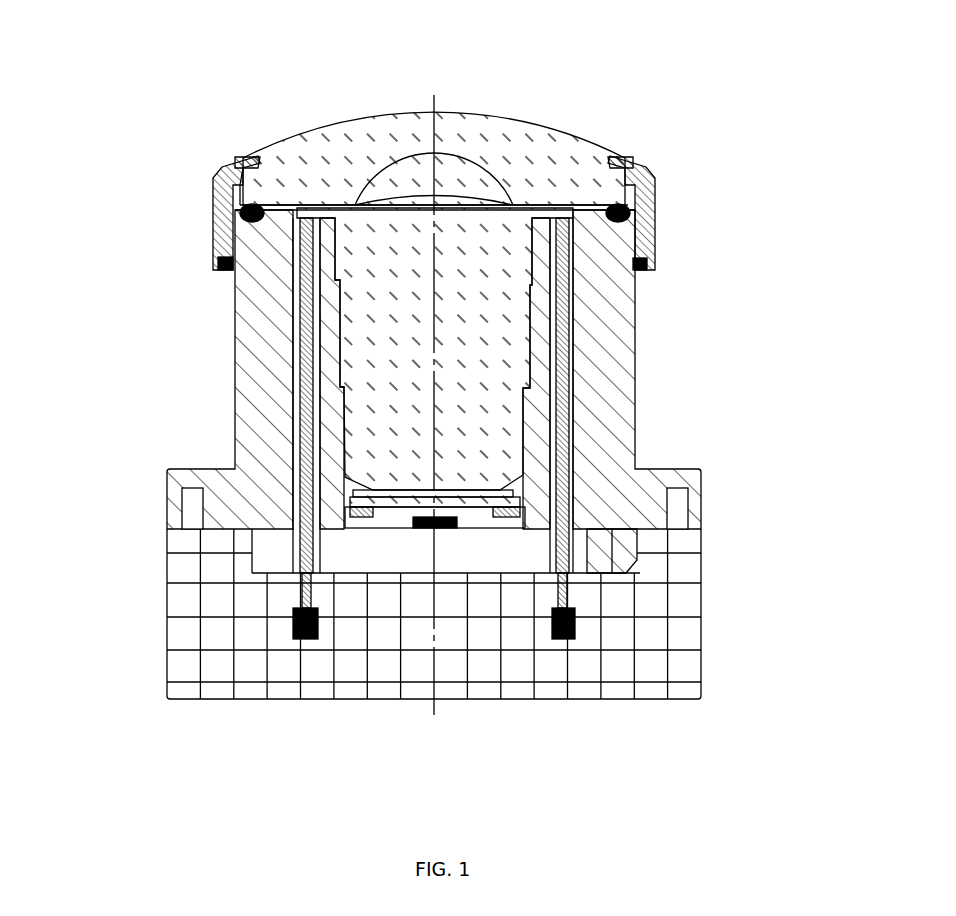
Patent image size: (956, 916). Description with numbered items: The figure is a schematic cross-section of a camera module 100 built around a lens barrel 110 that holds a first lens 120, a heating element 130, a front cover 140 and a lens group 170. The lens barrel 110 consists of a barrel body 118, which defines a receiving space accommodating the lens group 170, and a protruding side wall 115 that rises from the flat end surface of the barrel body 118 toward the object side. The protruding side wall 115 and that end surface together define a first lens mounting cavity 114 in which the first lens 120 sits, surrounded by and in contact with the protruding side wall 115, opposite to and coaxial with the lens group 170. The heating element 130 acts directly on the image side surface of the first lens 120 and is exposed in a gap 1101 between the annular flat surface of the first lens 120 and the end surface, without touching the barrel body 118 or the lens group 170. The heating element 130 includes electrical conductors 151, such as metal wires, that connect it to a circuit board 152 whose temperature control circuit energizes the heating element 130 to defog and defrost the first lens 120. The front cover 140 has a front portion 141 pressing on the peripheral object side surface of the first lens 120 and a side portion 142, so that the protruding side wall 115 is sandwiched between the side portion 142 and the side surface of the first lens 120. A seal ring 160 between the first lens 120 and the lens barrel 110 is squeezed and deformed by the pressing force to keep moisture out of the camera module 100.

The camera module 100 is at (183, 72).
The lens barrel 110 is at (380, 370).
The first lens mounting cavity 114 is at (425, 165).
The protruding side wall 115 is at (235, 198).
The barrel body 118 is at (245, 349).
The first lens 120 is at (485, 130).
The heating element 130 is at (565, 207).
The gap 1101 is at (288, 215).
The front cover 140 is at (514, 206).
The front portion 141 is at (633, 165).
The side portion 142 is at (653, 195).
The electrical conductors 151 is at (562, 392).
The circuit board 152 is at (620, 642).
The seal ring 160 is at (262, 212).
The lens group 170 is at (504, 338).